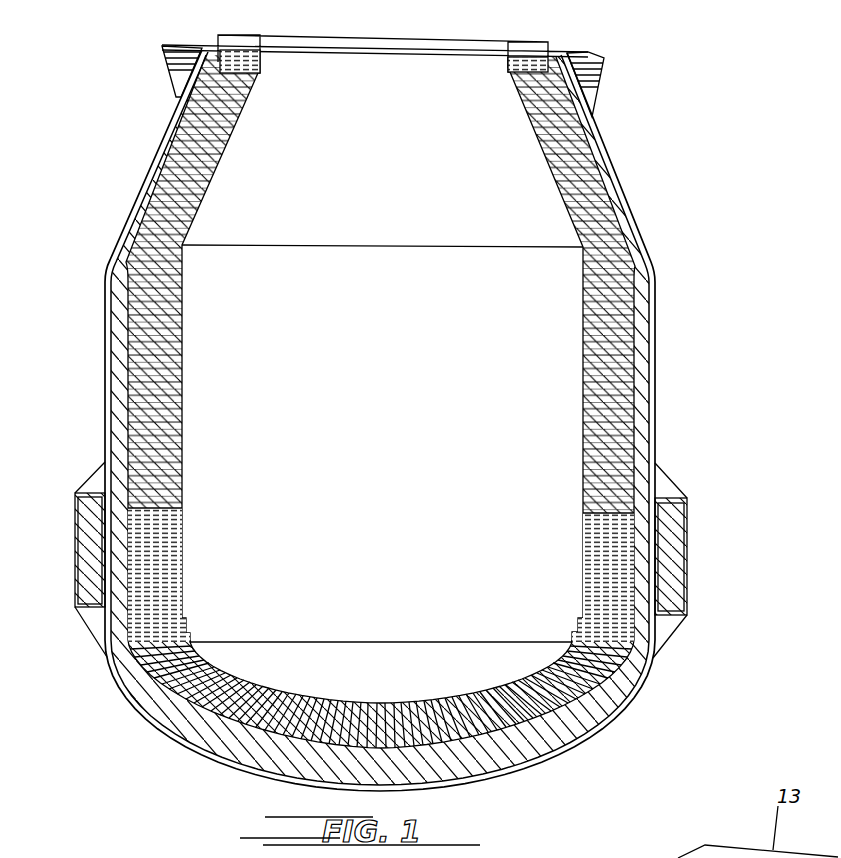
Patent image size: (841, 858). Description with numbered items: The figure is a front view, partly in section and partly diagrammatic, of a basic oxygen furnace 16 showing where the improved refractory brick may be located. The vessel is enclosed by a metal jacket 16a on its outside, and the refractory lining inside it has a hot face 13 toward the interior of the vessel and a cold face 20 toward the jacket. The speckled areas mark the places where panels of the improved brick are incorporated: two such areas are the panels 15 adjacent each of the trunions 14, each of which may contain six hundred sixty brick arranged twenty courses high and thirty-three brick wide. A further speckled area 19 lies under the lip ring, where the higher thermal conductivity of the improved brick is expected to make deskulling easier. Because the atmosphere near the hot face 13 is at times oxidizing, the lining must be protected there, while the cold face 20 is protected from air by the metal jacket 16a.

The hot face 13 is at (598, 530).
The trunion 14 is at (687, 567).
The panel 15 is at (600, 568).
The basic oxygen furnace 16 is at (687, 378).
The metal jacket 16a is at (657, 340).
The area under the lip ring 19 is at (510, 68).
The cold face 20 is at (632, 530).